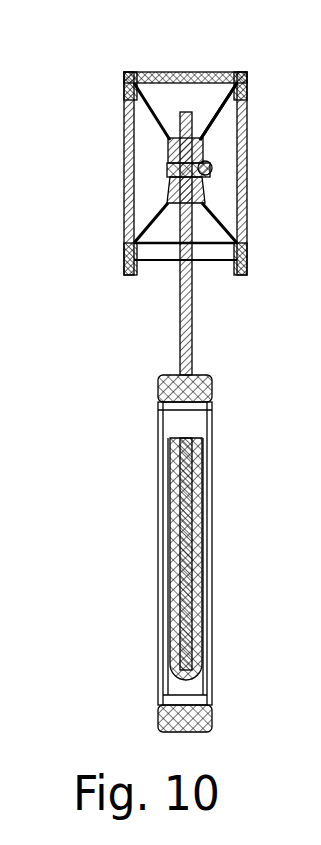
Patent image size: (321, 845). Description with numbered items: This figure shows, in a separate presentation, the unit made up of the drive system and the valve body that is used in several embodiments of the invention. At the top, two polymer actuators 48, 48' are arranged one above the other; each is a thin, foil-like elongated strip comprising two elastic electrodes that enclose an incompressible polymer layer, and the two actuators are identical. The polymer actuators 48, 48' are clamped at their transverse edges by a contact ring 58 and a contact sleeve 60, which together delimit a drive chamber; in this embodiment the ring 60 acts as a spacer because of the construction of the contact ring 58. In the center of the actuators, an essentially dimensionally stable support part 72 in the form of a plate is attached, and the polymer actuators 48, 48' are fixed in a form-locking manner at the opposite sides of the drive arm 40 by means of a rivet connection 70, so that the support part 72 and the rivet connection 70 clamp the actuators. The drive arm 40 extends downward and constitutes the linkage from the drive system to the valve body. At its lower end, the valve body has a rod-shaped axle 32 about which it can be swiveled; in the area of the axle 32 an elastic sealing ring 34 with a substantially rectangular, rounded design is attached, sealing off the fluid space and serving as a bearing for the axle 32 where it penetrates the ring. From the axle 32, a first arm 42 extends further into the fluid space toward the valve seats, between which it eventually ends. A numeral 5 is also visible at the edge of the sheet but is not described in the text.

The contact ring 58 is at (126, 68).
The contact sleeve 60 is at (172, 70).
The polymer actuator 48 is at (147, 173).
The polymer actuator 48' is at (257, 111).
The support part 72 is at (165, 150).
The rivet connection 70 is at (168, 180).
The drive arm 40 is at (181, 323).
The sealing ring 34 is at (209, 380).
The first arm 42 is at (175, 487).
The axle 32 is at (162, 664).
The device 5 is at (314, 378).